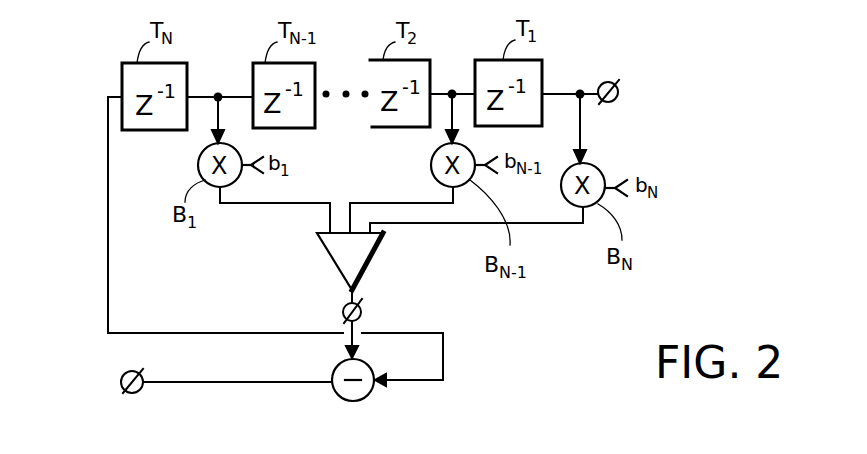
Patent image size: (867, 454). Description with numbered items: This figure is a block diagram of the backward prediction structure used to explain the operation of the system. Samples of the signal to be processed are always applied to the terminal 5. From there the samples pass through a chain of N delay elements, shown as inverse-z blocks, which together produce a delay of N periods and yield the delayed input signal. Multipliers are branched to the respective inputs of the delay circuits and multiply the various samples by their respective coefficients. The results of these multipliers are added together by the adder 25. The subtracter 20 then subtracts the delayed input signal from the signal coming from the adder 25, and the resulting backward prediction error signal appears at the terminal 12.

The terminal 5 is at (604, 82).
The terminal 12 is at (120, 381).
The subtracter 20 is at (345, 400).
The adder 25 is at (372, 262).